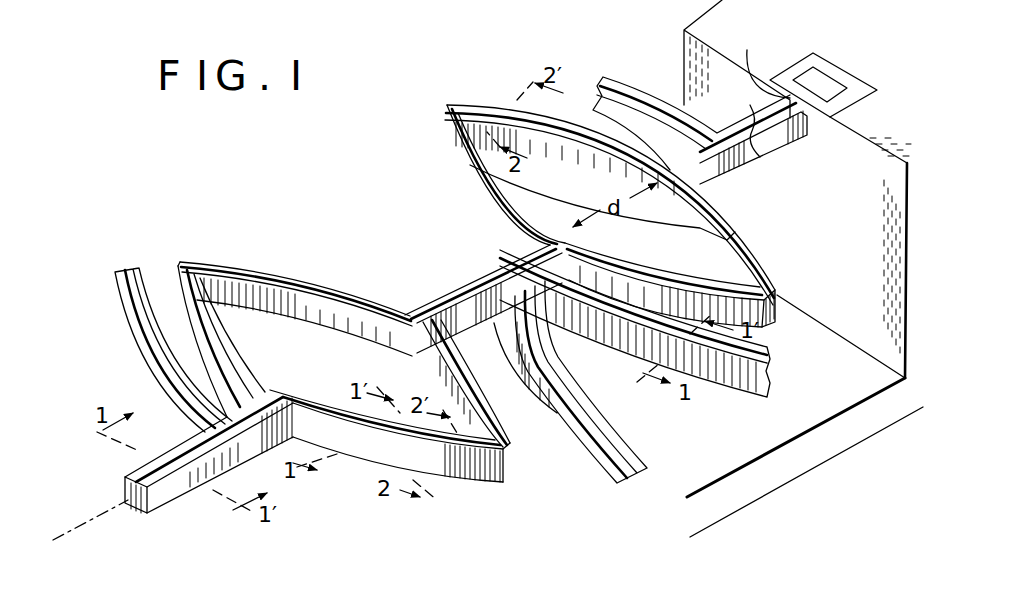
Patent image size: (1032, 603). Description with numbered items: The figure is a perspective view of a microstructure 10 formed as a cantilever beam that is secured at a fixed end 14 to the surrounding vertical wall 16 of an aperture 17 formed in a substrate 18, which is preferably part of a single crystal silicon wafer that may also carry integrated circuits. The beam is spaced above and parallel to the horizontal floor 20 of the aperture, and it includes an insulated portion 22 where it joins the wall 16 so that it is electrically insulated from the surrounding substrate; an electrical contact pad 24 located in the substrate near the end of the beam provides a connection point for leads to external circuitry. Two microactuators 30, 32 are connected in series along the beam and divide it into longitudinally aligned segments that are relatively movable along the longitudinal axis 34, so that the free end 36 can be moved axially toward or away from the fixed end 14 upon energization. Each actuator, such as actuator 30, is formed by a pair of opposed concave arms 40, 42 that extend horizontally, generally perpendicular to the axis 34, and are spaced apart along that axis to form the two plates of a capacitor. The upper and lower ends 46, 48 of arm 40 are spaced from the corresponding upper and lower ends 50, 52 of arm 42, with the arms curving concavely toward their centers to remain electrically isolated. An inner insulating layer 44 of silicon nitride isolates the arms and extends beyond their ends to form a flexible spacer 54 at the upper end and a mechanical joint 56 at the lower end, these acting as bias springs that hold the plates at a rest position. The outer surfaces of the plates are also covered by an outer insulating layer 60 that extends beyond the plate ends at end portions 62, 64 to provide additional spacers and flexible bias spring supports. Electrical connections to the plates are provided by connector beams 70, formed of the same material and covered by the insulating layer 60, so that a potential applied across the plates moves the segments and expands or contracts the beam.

The microstructure 10 is at (268, 542).
The fixed end 14 is at (808, 150).
The vertical wall 16 is at (863, 330).
The aperture 17 is at (635, 45).
The substrate 18 is at (775, 478).
The horizontal floor 20 is at (823, 413).
The insulated portion 22 is at (762, 60).
The electrical contact pad 24 is at (827, 92).
The microactuator 30 is at (455, 363).
The second microactuator 32 is at (437, 143).
The longitudinal axis 34 is at (80, 527).
The free end 36 is at (175, 476).
The concave arm 40 is at (320, 283).
The concave arm 42 is at (270, 373).
The insulating layer 44 is at (353, 307).
The upper end 46 is at (220, 263).
The lower end 48 is at (507, 437).
The upper end 50 is at (197, 300).
The lower end 52 is at (458, 480).
The flexible spacer 54 is at (233, 308).
The mechanical joint 56 is at (483, 480).
The outer insulating layer 60 is at (470, 183).
The end portion 62 is at (176, 259).
The end portion 64 is at (513, 483).
The connector beams 70 is at (125, 365).